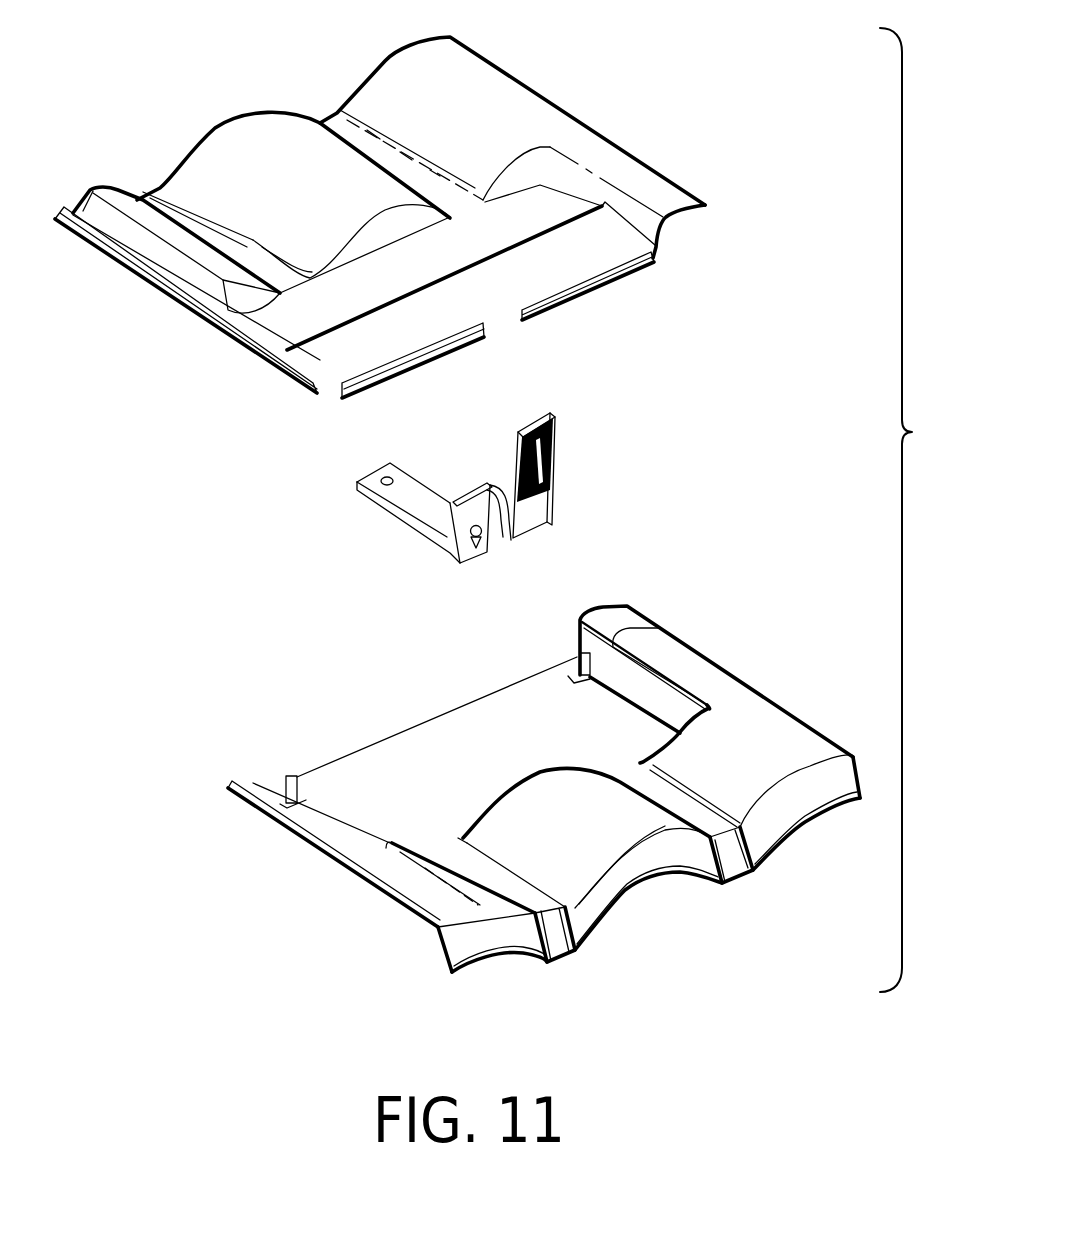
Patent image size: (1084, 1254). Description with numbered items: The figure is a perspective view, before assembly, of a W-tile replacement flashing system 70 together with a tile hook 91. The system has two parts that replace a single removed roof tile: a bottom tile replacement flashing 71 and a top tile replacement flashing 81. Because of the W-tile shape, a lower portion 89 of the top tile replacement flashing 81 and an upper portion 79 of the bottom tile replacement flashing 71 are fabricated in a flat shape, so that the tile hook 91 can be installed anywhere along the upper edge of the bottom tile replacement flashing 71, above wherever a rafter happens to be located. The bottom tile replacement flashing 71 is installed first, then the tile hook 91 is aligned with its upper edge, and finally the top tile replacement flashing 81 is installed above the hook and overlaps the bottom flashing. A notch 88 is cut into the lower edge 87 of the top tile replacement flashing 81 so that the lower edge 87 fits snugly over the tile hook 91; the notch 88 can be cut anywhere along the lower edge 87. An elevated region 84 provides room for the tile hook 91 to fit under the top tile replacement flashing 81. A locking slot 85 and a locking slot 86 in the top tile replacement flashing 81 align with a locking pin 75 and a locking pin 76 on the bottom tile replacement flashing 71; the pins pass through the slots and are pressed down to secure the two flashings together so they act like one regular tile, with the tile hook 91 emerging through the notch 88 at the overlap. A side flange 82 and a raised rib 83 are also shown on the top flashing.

The W-tile replacement flashing system 70 is at (500, 510).
The bottom tile replacement flashing 71 is at (544, 785).
The locking pin 75 is at (288, 775).
The locking pin 76 is at (577, 652).
The upper portion 79 is at (470, 707).
The top tile replacement flashing 81 is at (401, 244).
The side flange 82 is at (173, 303).
The raised rib 83 is at (246, 128).
The elevated region 84 is at (385, 350).
The locking slot 85 is at (333, 362).
The locking slot 86 is at (626, 243).
The lower edge 87 is at (566, 296).
The notch 88 is at (503, 326).
The lower portion 89 is at (287, 323).
The tile hook 91 is at (550, 502).